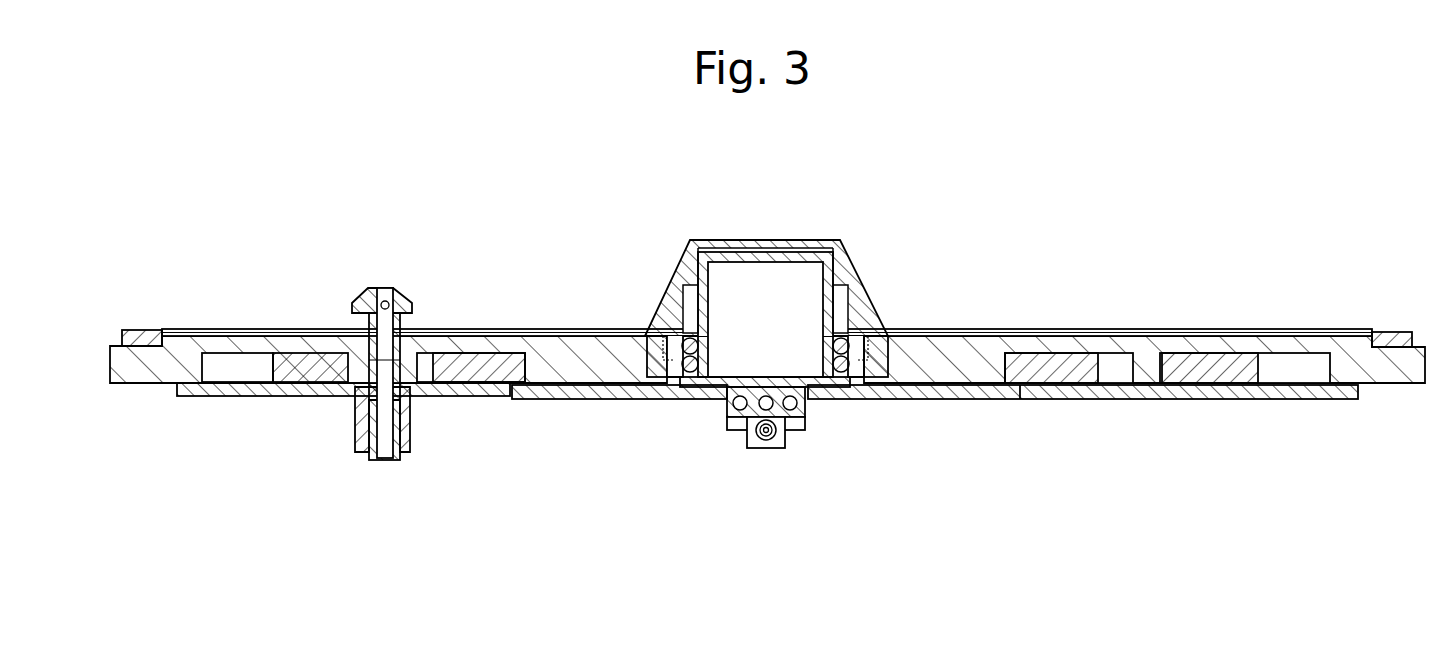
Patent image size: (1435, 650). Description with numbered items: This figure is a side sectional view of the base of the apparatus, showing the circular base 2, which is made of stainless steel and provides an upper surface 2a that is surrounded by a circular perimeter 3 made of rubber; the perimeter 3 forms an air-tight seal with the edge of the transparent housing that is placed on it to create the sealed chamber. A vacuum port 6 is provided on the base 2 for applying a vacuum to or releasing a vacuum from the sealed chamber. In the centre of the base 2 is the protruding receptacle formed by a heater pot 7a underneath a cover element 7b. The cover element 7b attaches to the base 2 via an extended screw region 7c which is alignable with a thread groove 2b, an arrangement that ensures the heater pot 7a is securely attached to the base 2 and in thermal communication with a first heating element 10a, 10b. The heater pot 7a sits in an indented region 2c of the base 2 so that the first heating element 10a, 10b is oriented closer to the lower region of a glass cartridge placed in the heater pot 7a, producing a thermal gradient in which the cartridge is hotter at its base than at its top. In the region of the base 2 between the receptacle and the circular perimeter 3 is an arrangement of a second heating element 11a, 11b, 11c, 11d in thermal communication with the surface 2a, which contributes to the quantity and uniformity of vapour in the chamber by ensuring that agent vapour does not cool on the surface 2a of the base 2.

The circular base 2 is at (167, 362).
The surface 2a is at (1182, 331).
The thread groove 2b is at (868, 345).
The indented region 2c is at (818, 390).
The circular perimeter 3 is at (1389, 333).
The vacuum port 6 is at (380, 296).
The heater pot 7a is at (752, 332).
The cover element 7b is at (866, 290).
The extended screw region 7c is at (845, 365).
The first heating element 10a is at (684, 334).
The first heating element 10b is at (856, 336).
The second heating element 11a is at (310, 372).
The second heating element 11b is at (477, 386).
The second heating element 11c is at (1065, 370).
The second heating element 11d is at (1230, 372).